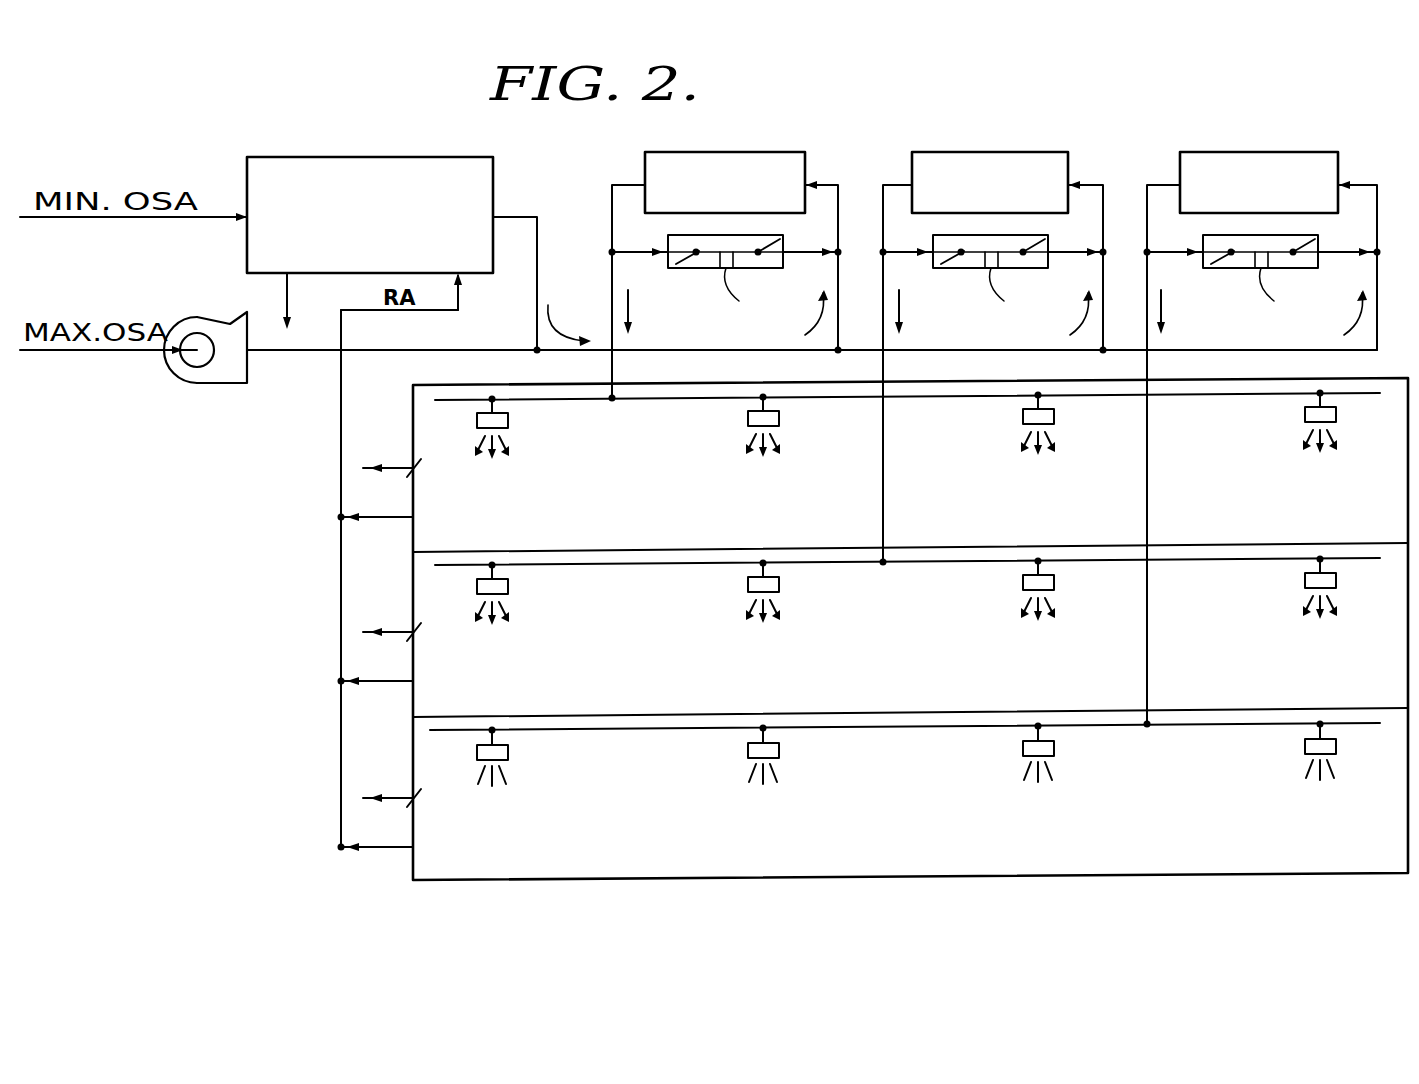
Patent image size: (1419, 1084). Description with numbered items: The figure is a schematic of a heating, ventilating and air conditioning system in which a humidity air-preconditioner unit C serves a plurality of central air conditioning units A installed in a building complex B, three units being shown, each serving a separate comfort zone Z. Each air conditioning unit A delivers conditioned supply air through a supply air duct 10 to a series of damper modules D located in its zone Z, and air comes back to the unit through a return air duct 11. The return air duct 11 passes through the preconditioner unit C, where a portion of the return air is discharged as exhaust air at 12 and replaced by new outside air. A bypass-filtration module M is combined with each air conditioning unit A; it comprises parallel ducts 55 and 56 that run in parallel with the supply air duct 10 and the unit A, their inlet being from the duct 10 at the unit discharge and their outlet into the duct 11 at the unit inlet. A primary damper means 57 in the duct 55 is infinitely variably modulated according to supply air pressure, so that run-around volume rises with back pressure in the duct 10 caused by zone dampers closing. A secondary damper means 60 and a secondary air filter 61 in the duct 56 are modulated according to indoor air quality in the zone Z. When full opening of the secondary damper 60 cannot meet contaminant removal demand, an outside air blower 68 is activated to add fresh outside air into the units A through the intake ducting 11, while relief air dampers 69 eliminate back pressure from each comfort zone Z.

The supply air duct 10 is at (612, 278).
The return air duct 11 is at (840, 321).
The exhaust air discharge 12 is at (293, 298).
The primary bypass duct 55 is at (690, 238).
The secondary bypass duct 56 is at (756, 268).
The primary damper means 57 is at (772, 254).
The secondary damper means 60 is at (672, 258).
The secondary air filter 61 is at (714, 262).
The OSA blower 68 is at (190, 386).
The relief air dampers 69 is at (421, 477).
The air conditioning unit A is at (766, 148).
The building complex B is at (896, 879).
The air pre-conditioner unit C is at (380, 150).
The damper modules D is at (512, 422).
The bypass-filtration module M is at (1010, 298).
The comfort zone Z is at (683, 466).